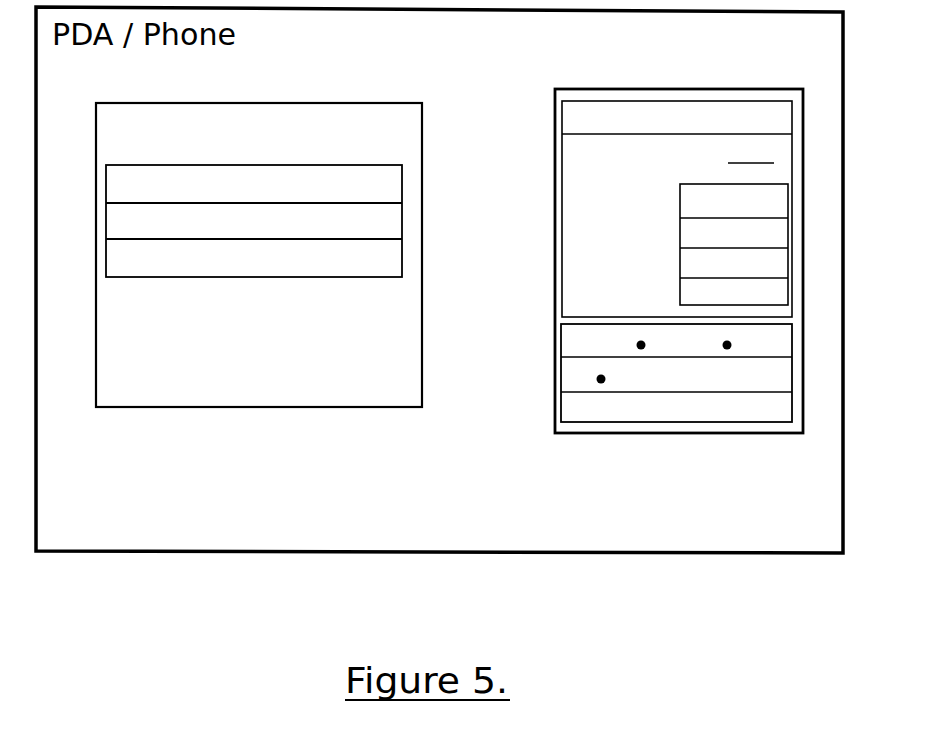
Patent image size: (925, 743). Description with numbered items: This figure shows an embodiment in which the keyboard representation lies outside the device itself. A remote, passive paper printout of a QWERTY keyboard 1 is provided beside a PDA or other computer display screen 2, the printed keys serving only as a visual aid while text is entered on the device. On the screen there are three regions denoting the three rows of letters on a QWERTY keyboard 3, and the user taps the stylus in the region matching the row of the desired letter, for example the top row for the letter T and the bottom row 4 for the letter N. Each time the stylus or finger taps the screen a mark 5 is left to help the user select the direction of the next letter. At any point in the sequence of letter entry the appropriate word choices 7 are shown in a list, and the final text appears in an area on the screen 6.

The paper printout of a QWERTY keyboard 1 is at (235, 407).
The PDA or computer display screen 2 is at (632, 433).
The three regions denoting the three rows of letters on a QWERTY keyboard 3 is at (577, 390).
The bottom row 4 is at (708, 410).
The mark 5 is at (597, 379).
The area on the screen showing the final text 6 is at (570, 167).
The word choices 7 is at (678, 218).